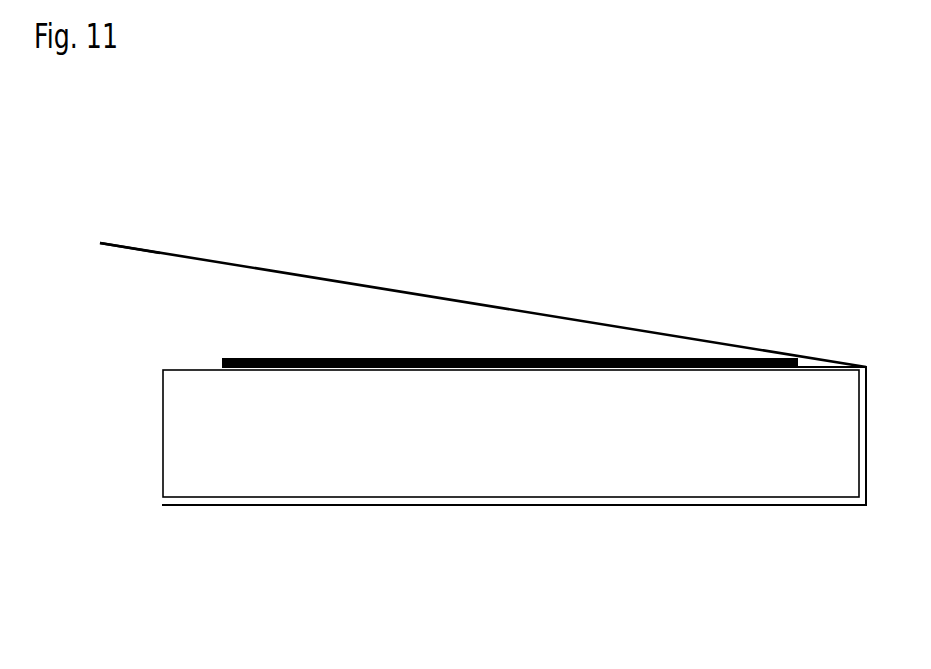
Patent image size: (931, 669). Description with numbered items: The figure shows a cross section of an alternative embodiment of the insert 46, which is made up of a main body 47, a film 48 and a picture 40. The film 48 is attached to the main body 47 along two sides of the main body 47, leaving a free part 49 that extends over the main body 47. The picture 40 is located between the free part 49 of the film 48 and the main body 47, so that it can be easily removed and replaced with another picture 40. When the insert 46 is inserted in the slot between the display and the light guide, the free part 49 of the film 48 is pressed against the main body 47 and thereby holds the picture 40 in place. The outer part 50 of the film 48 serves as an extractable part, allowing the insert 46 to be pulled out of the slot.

The picture 40 is at (627, 355).
The insert 46 is at (578, 273).
The main body 47 is at (338, 447).
The film 48 is at (610, 513).
The free part 49 is at (322, 272).
The outer part 50 is at (113, 240).